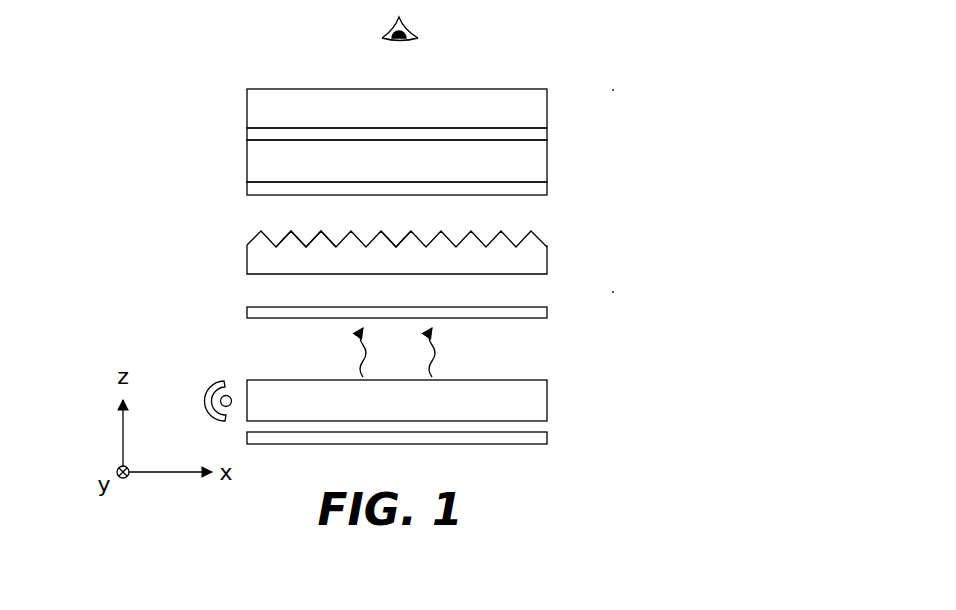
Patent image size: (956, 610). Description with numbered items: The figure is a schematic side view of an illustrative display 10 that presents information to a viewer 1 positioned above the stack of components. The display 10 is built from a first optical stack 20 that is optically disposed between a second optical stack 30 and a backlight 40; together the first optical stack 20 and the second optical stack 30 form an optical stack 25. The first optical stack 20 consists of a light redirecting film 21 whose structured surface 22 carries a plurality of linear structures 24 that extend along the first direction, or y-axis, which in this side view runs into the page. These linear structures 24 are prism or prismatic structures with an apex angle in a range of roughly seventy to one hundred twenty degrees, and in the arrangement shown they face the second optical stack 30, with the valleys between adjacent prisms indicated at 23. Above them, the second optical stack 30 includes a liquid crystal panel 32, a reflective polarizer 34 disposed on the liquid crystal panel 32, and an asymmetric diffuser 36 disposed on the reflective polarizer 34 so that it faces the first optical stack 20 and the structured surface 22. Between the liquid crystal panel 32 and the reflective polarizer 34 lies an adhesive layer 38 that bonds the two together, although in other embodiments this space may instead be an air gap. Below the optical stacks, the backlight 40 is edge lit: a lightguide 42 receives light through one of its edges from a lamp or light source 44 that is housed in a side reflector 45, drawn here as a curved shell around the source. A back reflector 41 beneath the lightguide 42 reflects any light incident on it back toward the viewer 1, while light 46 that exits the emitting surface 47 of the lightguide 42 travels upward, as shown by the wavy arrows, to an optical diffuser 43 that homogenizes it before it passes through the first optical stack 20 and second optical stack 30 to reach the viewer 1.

The viewer 1 is at (386, 26).
The display 10 is at (263, 52).
The first optical stack 20 is at (560, 220).
The light redirecting film 21 is at (252, 263).
The structured surface 22 is at (482, 226).
The valley between prisms 23 is at (390, 240).
The linear structures 24 is at (323, 236).
The optical stack 25 is at (613, 89).
The second optical stack 30 is at (560, 89).
The liquid crystal panel 32 is at (252, 106).
The reflective polarizer 34 is at (253, 172).
The asymmetric diffuser 36 is at (252, 188).
The adhesive layer 38 is at (252, 135).
The backlight 40 is at (560, 307).
The back reflector 41 is at (252, 435).
The lightguide 42 is at (509, 390).
The optical diffuser 43 is at (252, 311).
The light source 44 is at (229, 395).
The side reflector 45 is at (207, 397).
The light 46 is at (357, 356).
The emitting surface 47 is at (458, 378).